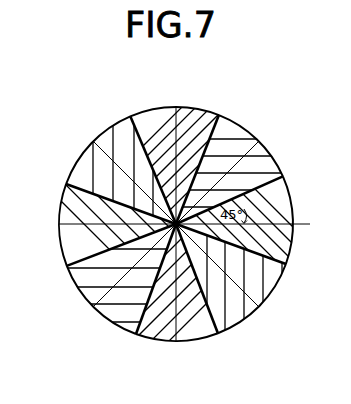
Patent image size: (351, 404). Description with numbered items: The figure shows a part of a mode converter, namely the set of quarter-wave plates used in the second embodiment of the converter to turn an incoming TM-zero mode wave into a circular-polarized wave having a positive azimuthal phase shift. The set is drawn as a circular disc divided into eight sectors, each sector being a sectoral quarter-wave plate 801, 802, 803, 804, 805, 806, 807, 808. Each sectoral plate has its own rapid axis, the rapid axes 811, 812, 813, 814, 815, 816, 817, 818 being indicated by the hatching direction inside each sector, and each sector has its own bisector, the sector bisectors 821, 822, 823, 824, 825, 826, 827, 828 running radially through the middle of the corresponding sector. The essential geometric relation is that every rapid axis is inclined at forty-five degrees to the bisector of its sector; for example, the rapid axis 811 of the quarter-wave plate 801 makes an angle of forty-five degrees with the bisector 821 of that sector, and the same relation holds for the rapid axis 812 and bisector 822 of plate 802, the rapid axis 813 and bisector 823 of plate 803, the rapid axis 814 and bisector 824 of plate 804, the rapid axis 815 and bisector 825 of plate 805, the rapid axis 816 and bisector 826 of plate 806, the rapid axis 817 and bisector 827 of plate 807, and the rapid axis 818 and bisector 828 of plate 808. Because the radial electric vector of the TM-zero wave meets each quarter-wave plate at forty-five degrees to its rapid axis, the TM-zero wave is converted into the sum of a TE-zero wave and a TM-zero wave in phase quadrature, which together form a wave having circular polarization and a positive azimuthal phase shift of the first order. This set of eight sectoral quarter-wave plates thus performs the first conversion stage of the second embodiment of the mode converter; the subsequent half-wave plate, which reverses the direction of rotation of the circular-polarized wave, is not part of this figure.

The sectoral quarter-wave plate 801 is at (293, 196).
The sectoral quarter-wave plate 802 is at (238, 123).
The sectoral quarter-wave plate 803 is at (150, 117).
The sectoral quarter-wave plate 804 is at (84, 160).
The sectoral quarter-wave plate 805 is at (61, 241).
The sectoral quarter-wave plate 806 is at (105, 318).
The sectoral quarter-wave plate 807 is at (191, 322).
The sectoral quarter-wave plate 808 is at (259, 296).
The rapid axis 811 is at (284, 204).
The rapid axis 812 is at (226, 117).
The rapid axis 813 is at (187, 115).
The rapid axis 814 is at (128, 122).
The rapid axis 815 is at (65, 190).
The rapid axis 816 is at (72, 280).
The rapid axis 817 is at (155, 337).
The rapid axis 818 is at (240, 310).
The sector bisector 821 is at (303, 228).
The sector bisector 822 is at (258, 149).
The sector bisector 823 is at (180, 107).
The sector bisector 824 is at (97, 146).
The sector bisector 825 is at (58, 224).
The sector bisector 826 is at (92, 308).
The sector bisector 827 is at (174, 341).
The sector bisector 828 is at (259, 306).